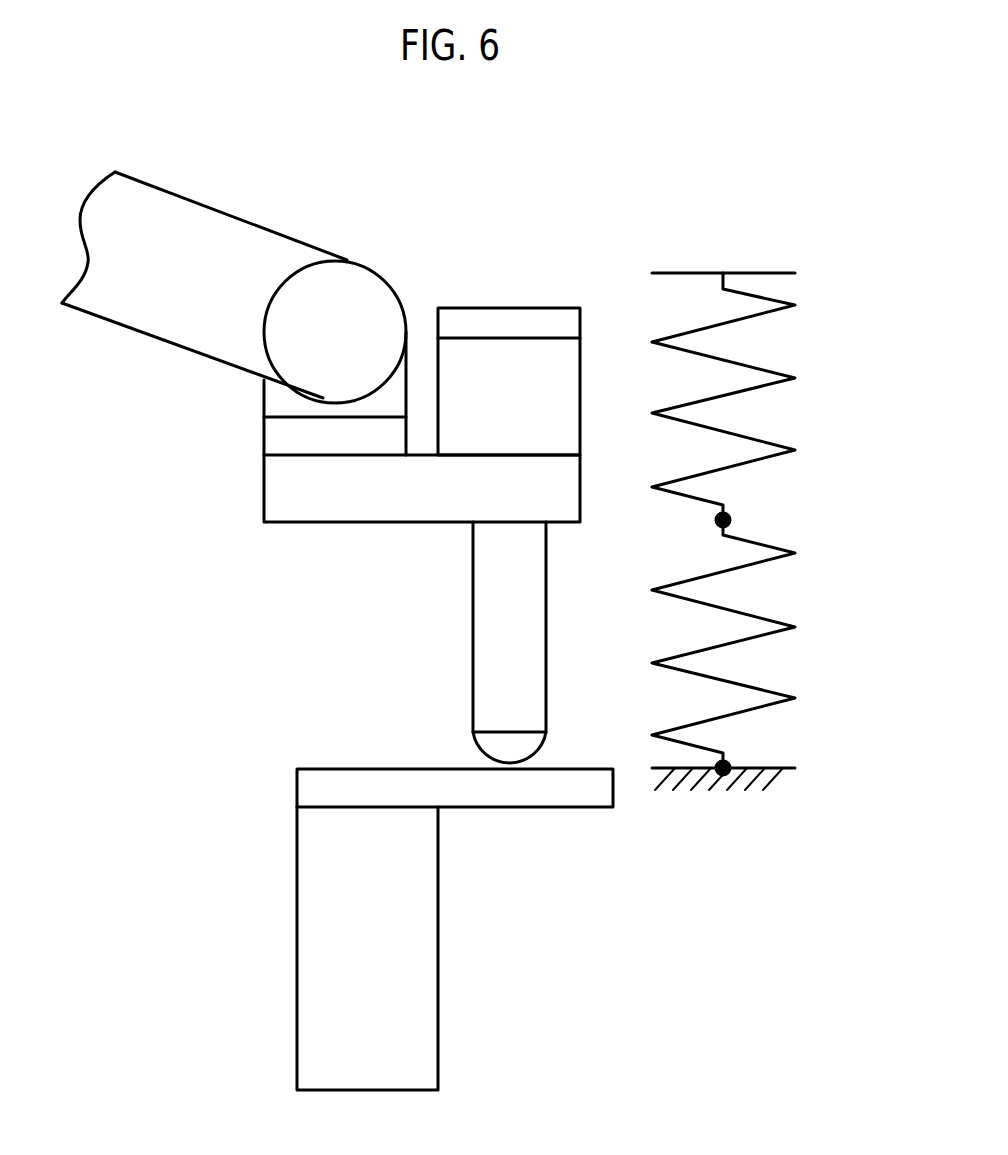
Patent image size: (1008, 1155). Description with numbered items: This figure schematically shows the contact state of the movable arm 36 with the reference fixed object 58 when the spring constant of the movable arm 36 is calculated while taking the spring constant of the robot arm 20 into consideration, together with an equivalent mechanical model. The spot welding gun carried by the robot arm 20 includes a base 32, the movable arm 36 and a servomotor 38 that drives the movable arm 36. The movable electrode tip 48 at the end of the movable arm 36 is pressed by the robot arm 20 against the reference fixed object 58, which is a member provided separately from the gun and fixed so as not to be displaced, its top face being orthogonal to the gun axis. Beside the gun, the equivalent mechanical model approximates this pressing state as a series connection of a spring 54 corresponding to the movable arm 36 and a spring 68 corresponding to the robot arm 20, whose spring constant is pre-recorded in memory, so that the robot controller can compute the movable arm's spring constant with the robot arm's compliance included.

The robot arm 20 is at (232, 243).
The base 32 is at (287, 495).
The movable arm 36 is at (483, 573).
The servomotor 38 is at (580, 387).
The movable electrode tip 48 is at (485, 750).
The spring 54 is at (772, 618).
The reference fixed object 58 is at (330, 915).
The spring 68 is at (772, 368).